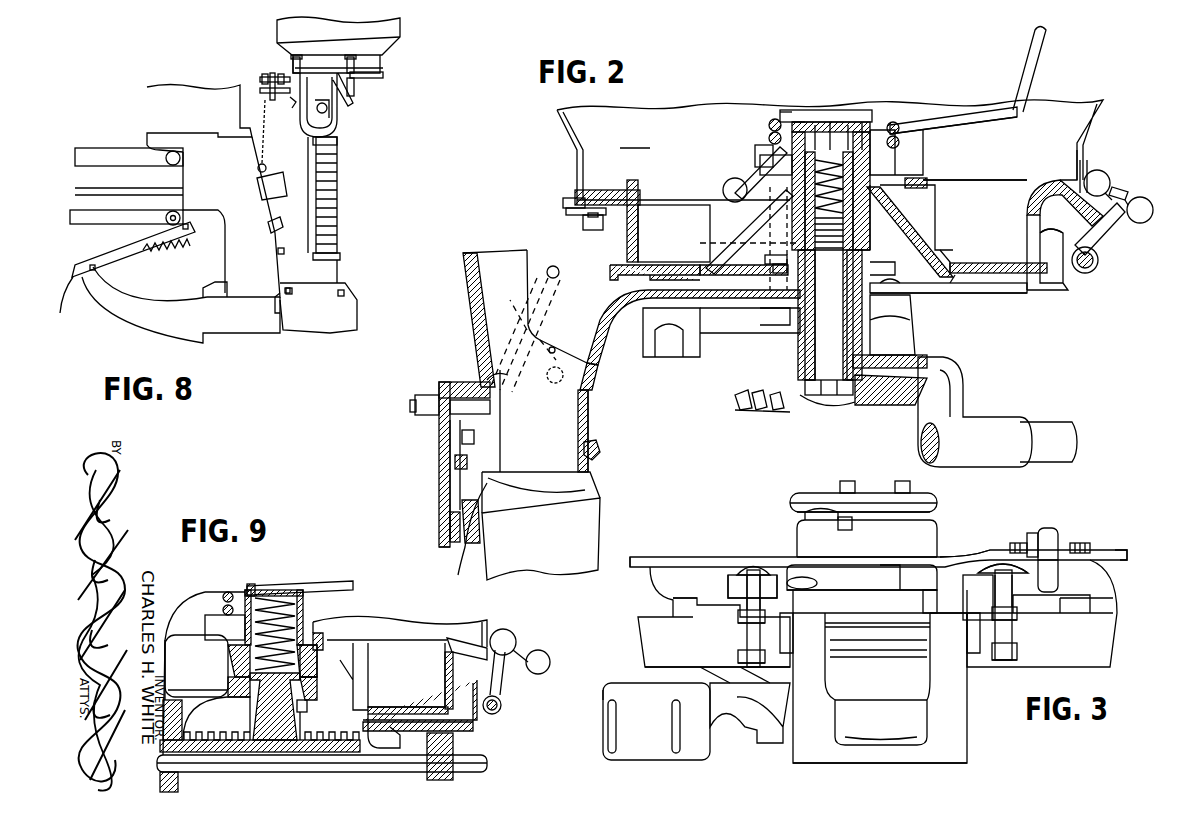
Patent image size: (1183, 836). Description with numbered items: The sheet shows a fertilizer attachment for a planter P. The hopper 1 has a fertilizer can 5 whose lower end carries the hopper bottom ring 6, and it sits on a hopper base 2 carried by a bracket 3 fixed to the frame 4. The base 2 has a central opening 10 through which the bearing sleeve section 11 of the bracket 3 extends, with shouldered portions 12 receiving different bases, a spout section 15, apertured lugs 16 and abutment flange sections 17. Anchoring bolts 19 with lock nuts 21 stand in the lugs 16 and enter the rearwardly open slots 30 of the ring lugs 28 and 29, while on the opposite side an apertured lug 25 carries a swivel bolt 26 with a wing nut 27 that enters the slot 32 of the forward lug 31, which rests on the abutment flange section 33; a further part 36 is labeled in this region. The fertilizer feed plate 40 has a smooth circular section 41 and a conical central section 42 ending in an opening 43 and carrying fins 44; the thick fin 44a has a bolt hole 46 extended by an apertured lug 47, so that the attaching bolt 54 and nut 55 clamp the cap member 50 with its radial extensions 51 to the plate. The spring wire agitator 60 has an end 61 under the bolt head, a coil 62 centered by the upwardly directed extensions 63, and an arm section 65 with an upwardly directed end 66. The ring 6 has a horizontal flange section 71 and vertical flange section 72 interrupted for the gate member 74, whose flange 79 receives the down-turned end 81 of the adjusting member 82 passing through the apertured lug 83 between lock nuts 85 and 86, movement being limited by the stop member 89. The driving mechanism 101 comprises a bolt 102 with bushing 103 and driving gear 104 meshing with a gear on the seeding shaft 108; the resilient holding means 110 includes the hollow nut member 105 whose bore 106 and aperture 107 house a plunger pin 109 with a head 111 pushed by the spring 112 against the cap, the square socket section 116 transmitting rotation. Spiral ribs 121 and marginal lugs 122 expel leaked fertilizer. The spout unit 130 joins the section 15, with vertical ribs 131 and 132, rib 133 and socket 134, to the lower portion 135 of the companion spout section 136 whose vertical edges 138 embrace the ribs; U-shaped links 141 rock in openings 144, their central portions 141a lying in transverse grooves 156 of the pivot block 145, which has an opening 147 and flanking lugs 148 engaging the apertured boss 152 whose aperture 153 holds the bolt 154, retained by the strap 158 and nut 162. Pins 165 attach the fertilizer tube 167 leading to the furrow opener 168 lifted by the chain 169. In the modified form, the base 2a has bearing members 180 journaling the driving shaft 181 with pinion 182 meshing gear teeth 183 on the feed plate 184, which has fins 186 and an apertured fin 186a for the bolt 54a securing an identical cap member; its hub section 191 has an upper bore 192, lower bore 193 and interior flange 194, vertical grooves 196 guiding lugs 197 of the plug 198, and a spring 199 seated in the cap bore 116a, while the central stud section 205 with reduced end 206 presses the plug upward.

In FIG. 8, the hopper 1 is at (262, 45).
In FIG. 2, the hopper 1 is at (553, 142).
In FIG. 8, the hopper base 2 is at (374, 75).
In FIG. 2, the hopper base 2 is at (1048, 302).
In FIG. 3, the hopper base 2 is at (632, 625).
In FIG. 9, the hopper supporting base 2a is at (488, 728).
In FIG. 8, the bracket 3 is at (290, 97).
In FIG. 2, the bracket 3 is at (930, 356).
In FIG. 3, the bracket 3 is at (603, 690).
In FIG. 8, the frame 4 is at (262, 75).
In FIG. 8, the fertilizer can 5 is at (395, 30).
In FIG. 2, the fertilizer can 5 is at (1095, 112).
In FIG. 9, the fertilizer can 5 is at (432, 625).
In FIG. 2, the hopper bottom ring 6 is at (987, 178).
In FIG. 3, the hopper bottom ring 6 is at (640, 553).
In FIG. 9, the hopper bottom ring 6 is at (395, 636).
In FIG. 2, the central opening 10 is at (785, 318).
In FIG. 2, the bearing sleeve section 11 is at (896, 306).
In FIG. 2, the shouldered portions 12 is at (913, 275).
In FIG. 2, the spout section 15 is at (606, 348).
In FIG. 3, the spout section 15 is at (962, 690).
In FIG. 3, the apertured lugs 16 is at (785, 641).
In FIG. 2, the abutment flange sections 17 is at (638, 235).
In FIG. 3, the abutment flange sections 17 is at (697, 602).
In FIG. 2, the anchoring bolts 19 is at (583, 232).
In FIG. 3, the anchoring bolts 19 is at (752, 568).
In FIG. 3, the lock nuts 21 is at (738, 655).
In FIG. 2, the apertured lug 25 is at (1085, 274).
In FIG. 2, the swivel bolt 26 is at (1105, 251).
In FIG. 9, the swivel bolt 26 is at (502, 702).
In FIG. 2, the wing nut 27 is at (1125, 195).
In FIG. 9, the wing nut 27 is at (539, 650).
In FIG. 2, the lug 28 is at (566, 213).
In FIG. 3, the lug 28 is at (732, 568).
In FIG. 3, the lug 29 is at (983, 568).
In FIG. 3, the slot 30 is at (728, 585).
In FIG. 2, the lug 31 is at (1094, 268).
In FIG. 2, the slot 32 is at (1120, 232).
In FIG. 2, the abutment flange section 33 is at (1027, 238).
In FIG. 2, the latch block 36 is at (1062, 236).
In FIG. 2, the fertilizer feed plate 40 is at (946, 250).
In FIG. 2, the circular section 41 is at (965, 265).
In FIG. 2, the conical central section 42 is at (904, 222).
In FIG. 2, the opening 43 is at (880, 214).
In FIG. 2, the fins 44 is at (936, 200).
In FIG. 2, the fin 44a is at (732, 190).
In FIG. 2, the bolt hole 46 is at (738, 242).
In FIG. 2, the apertured lug 47 is at (752, 225).
In FIG. 2, the cap member 50 is at (900, 160).
In FIG. 2, the radial extensions 51 is at (916, 178).
In FIG. 2, the attaching bolt 54 is at (767, 136).
In FIG. 3, the attaching bolt 54 is at (805, 527).
In FIG. 9, the bolt 54a is at (224, 600).
In FIG. 2, the nut 55 is at (765, 262).
In FIG. 2, the spring wire agitator 60 is at (925, 122).
In FIG. 3, the spring wire agitator 60 is at (788, 491).
In FIG. 9, the spring wire agitator 60 is at (336, 580).
In FIG. 2, the agitator end 61 is at (753, 152).
In FIG. 3, the agitator end 61 is at (868, 558).
In FIG. 2, the coil 62 is at (895, 120).
In FIG. 3, the coil 62 is at (870, 500).
In FIG. 2, the upwardly directed extensions 63 is at (800, 115).
In FIG. 3, the upwardly directed extensions 63 is at (845, 481).
In FIG. 2, the arm section 65 is at (968, 122).
In FIG. 2, the upwardly directed end 66 is at (1032, 72).
In FIG. 2, the horizontal flange section 71 is at (1080, 166).
In FIG. 3, the horizontal flange section 71 is at (1115, 550).
In FIG. 2, the vertical flange section 72 is at (1000, 292).
In FIG. 3, the vertical flange section 72 is at (1075, 605).
In FIG. 2, the gate member 74 is at (673, 203).
In FIG. 3, the gate member 74 is at (852, 580).
In FIG. 2, the flange 79 is at (575, 199).
In FIG. 3, the flange 79 is at (880, 580).
In FIG. 3, the down-turned end 81 is at (923, 604).
In FIG. 3, the adjusting member 82 is at (972, 546).
In FIG. 3, the apertured lug 83 is at (1048, 528).
In FIG. 3, the lock nut 85 is at (1033, 530).
In FIG. 3, the lock nut 86 is at (1078, 543).
In FIG. 3, the stop member 89 is at (805, 590).
In FIG. 2, the driving mechanism 101 is at (748, 416).
In FIG. 2, the bolt 102 is at (822, 410).
In FIG. 2, the bushing 103 is at (860, 340).
In FIG. 2, the driving gear 104 is at (735, 400).
In FIG. 2, the hollow nut member 105 is at (830, 262).
In FIG. 2, the bore 106 is at (816, 125).
In FIG. 2, the aperture 107 is at (830, 120).
In FIG. 2, the seeding shaft 108 is at (1022, 427).
In FIG. 2, the plunger pin 109 is at (848, 125).
In FIG. 2, the resilient holding means 110 is at (760, 182).
In FIG. 2, the head 111 is at (866, 125).
In FIG. 2, the spring 112 is at (862, 246).
In FIG. 2, the square socket section 116 is at (792, 120).
In FIG. 9, the bore 116a is at (252, 584).
In FIG. 2, the spiral ribs 121 is at (970, 290).
In FIG. 2, the marginal lugs 122 is at (610, 280).
In FIG. 8, the spout unit 130 is at (348, 108).
In FIG. 3, the vertical rib 131 is at (835, 626).
In FIG. 3, the vertical rib 132 is at (925, 625).
In FIG. 2, the rib 133 is at (554, 347).
In FIG. 3, the rib 133 is at (868, 730).
In FIG. 2, the semi-cylindrical socket 134 is at (590, 392).
In FIG. 3, the semi-cylindrical socket 134 is at (915, 748).
In FIG. 8, the lower portion 135 is at (328, 130).
In FIG. 2, the lower portion 135 is at (589, 410).
In FIG. 2, the companion spout section 136 is at (592, 472).
In FIG. 2, the vertical edges 138 is at (520, 267).
In FIG. 2, the links 141 is at (518, 369).
In FIG. 2, the central portions 141a is at (440, 456).
In FIG. 2, the openings 144 is at (559, 270).
In FIG. 2, the pivot block 145 is at (455, 555).
In FIG. 2, the opening 147 is at (446, 384).
In FIG. 2, the flanking lugs 148 is at (463, 560).
In FIG. 2, the apertured boss 152 is at (547, 376).
In FIG. 2, the aperture 153 is at (460, 462).
In FIG. 2, the bolt 154 is at (413, 407).
In FIG. 2, the transverse grooves 156 is at (481, 530).
In FIG. 8, the strap 158 is at (322, 145).
In FIG. 2, the strap 158 is at (447, 516).
In FIG. 2, the nut 162 is at (432, 432).
In FIG. 2, the pins 165 is at (601, 451).
In FIG. 8, the fertilizer tube 167 is at (330, 185).
In FIG. 2, the fertilizer tube 167 is at (557, 565).
In FIG. 8, the furrow opener 168 is at (222, 340).
In FIG. 8, the lifting chain 169 is at (272, 135).
In FIG. 9, the bearing members 180 is at (430, 776).
In FIG. 9, the driving shaft 181 is at (300, 773).
In FIG. 9, the pinion 182 is at (180, 778).
In FIG. 9, the gear teeth 183 is at (378, 750).
In FIG. 9, the fertilizer feed plate 184 is at (418, 700).
In FIG. 9, the fins 186 is at (358, 680).
In FIG. 9, the fin 186a is at (200, 640).
In FIG. 9, the central hub section 191 is at (222, 660).
In FIG. 9, the upper bore 192 is at (305, 630).
In FIG. 9, the lower bore 193 is at (308, 722).
In FIG. 9, the interior flange 194 is at (210, 686).
In FIG. 9, the vertical grooves 196 is at (240, 686).
In FIG. 9, the lugs 197 is at (300, 668).
In FIG. 9, the plug 198 is at (307, 706).
In FIG. 9, the spring 199 is at (278, 598).
In FIG. 9, the central stud section 205 is at (276, 742).
In FIG. 9, the reduced end 206 is at (240, 720).
In FIG. 8, the planter P is at (143, 108).